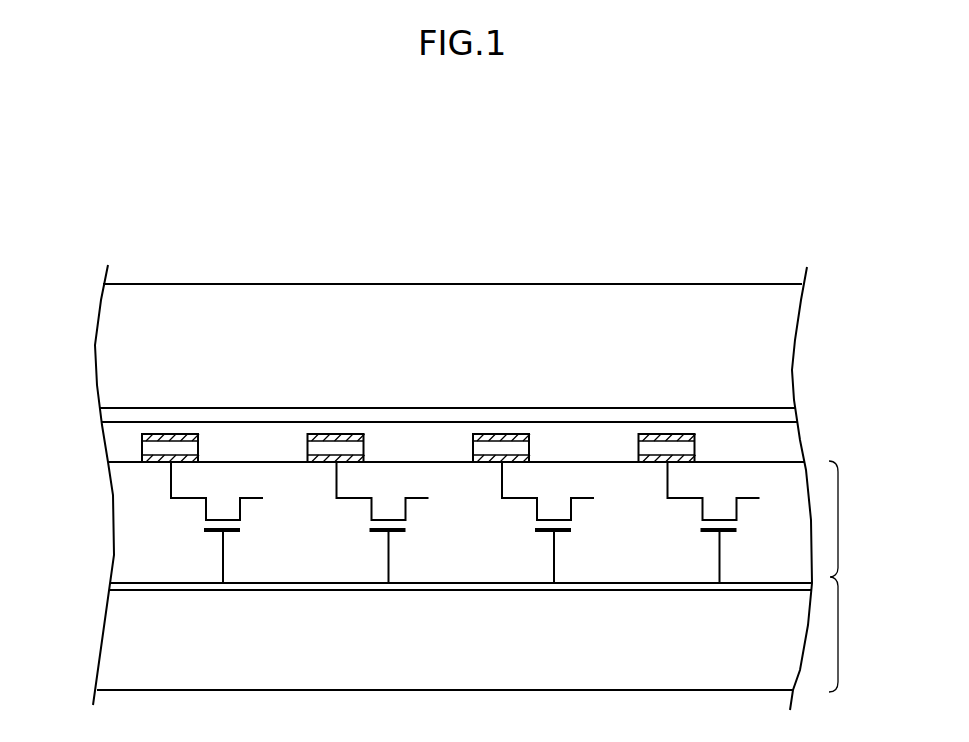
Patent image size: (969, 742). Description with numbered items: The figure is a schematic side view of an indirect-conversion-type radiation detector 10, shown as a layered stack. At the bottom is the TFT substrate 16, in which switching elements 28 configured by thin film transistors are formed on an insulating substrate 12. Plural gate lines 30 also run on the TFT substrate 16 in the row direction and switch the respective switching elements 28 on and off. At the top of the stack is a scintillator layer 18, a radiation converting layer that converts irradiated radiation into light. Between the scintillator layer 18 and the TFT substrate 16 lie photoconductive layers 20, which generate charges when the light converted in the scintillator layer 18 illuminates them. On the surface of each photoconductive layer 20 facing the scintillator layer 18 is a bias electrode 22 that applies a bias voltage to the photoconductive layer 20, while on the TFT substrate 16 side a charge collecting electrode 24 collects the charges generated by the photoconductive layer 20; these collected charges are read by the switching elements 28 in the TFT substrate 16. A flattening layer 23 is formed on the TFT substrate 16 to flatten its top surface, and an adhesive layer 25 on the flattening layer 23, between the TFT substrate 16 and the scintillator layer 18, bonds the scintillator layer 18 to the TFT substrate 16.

The radiation detector 10 is at (127, 207).
The insulating substrate 12 is at (115, 637).
The TFT substrate 16 is at (856, 576).
The scintillator layer 18 is at (108, 347).
The photoconductive layer 20 is at (199, 446).
The bias electrode 22 is at (198, 439).
The flattening layer 23 is at (113, 448).
The charge collecting electrode 24 is at (199, 458).
The adhesive layer 25 is at (101, 409).
The switching element 28 is at (262, 516).
The gate line 30 is at (790, 582).